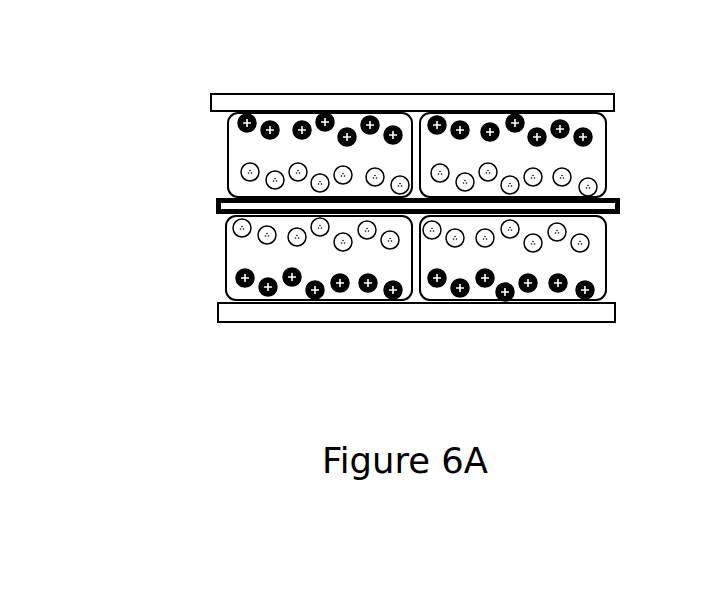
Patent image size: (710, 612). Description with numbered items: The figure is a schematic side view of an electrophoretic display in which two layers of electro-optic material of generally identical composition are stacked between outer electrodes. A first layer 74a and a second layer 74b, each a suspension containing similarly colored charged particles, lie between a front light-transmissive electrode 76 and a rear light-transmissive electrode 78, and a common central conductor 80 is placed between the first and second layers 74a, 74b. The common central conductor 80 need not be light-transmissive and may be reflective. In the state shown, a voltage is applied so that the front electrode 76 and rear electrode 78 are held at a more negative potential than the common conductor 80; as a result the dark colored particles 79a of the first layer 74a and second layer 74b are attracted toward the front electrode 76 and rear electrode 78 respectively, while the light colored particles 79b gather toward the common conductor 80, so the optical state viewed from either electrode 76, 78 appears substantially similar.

The front light-transmissive electrode 76 is at (210, 102).
The first layer 74a is at (227, 153).
The second layer 74b is at (225, 265).
The dark colored particles 79a is at (597, 133).
The light colored particles 79b is at (602, 188).
The common central conductor 80 is at (618, 213).
The rear light-transmissive electrode 78 is at (217, 315).